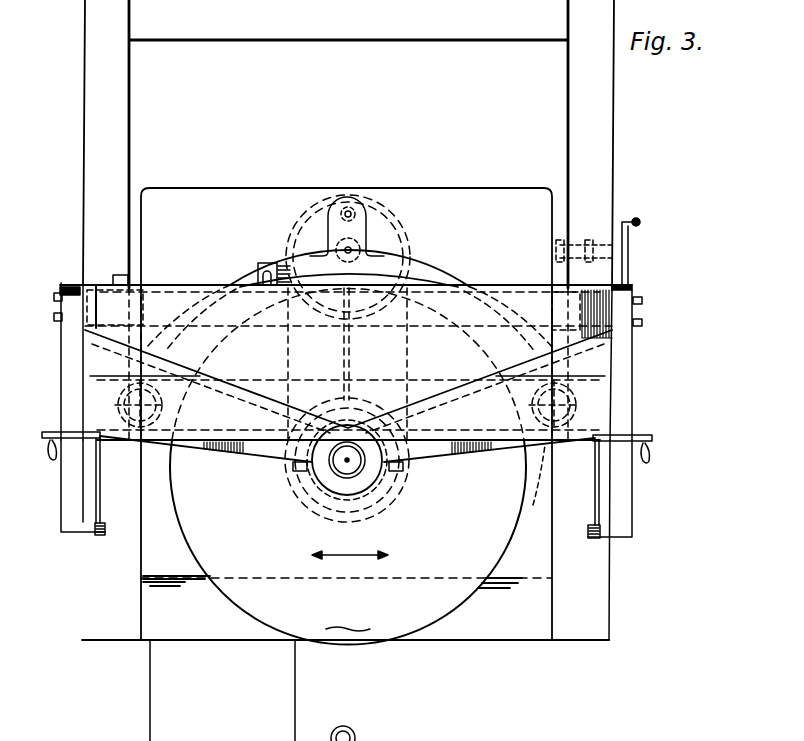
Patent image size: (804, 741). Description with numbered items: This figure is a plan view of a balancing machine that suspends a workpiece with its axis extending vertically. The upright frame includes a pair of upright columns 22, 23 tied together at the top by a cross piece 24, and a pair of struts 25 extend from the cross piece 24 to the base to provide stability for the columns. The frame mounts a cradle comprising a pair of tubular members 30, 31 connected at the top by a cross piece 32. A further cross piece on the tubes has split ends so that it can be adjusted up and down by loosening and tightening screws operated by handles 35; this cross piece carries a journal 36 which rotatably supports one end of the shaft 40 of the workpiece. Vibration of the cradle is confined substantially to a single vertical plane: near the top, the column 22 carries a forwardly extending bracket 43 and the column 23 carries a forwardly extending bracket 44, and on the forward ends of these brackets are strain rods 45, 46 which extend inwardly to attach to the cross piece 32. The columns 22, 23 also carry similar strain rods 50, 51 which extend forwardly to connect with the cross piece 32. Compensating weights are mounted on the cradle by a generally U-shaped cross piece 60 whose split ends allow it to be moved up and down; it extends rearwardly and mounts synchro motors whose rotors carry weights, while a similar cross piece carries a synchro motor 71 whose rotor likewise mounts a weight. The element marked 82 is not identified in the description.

The upright column 22 is at (85, 285).
The upright column 23 is at (640, 288).
The cross piece 24 is at (346, 346).
The struts 25 is at (129, 80).
The tubular member 30 is at (152, 440).
The tubular member 31 is at (531, 490).
The cross piece 32 is at (120, 440).
The handles 35 is at (42, 435).
The journal 36 is at (360, 485).
The shaft 40 is at (335, 466).
The bracket 43 is at (63, 405).
The bracket 44 is at (628, 402).
The strain rod 45 is at (94, 498).
The strain rod 46 is at (597, 518).
The strain rod 50 is at (95, 360).
The strain rod 51 is at (598, 368).
The U-shaped cross piece 60 is at (438, 266).
The synchro motor 71 is at (352, 731).
The stop bracket 82 is at (261, 258).